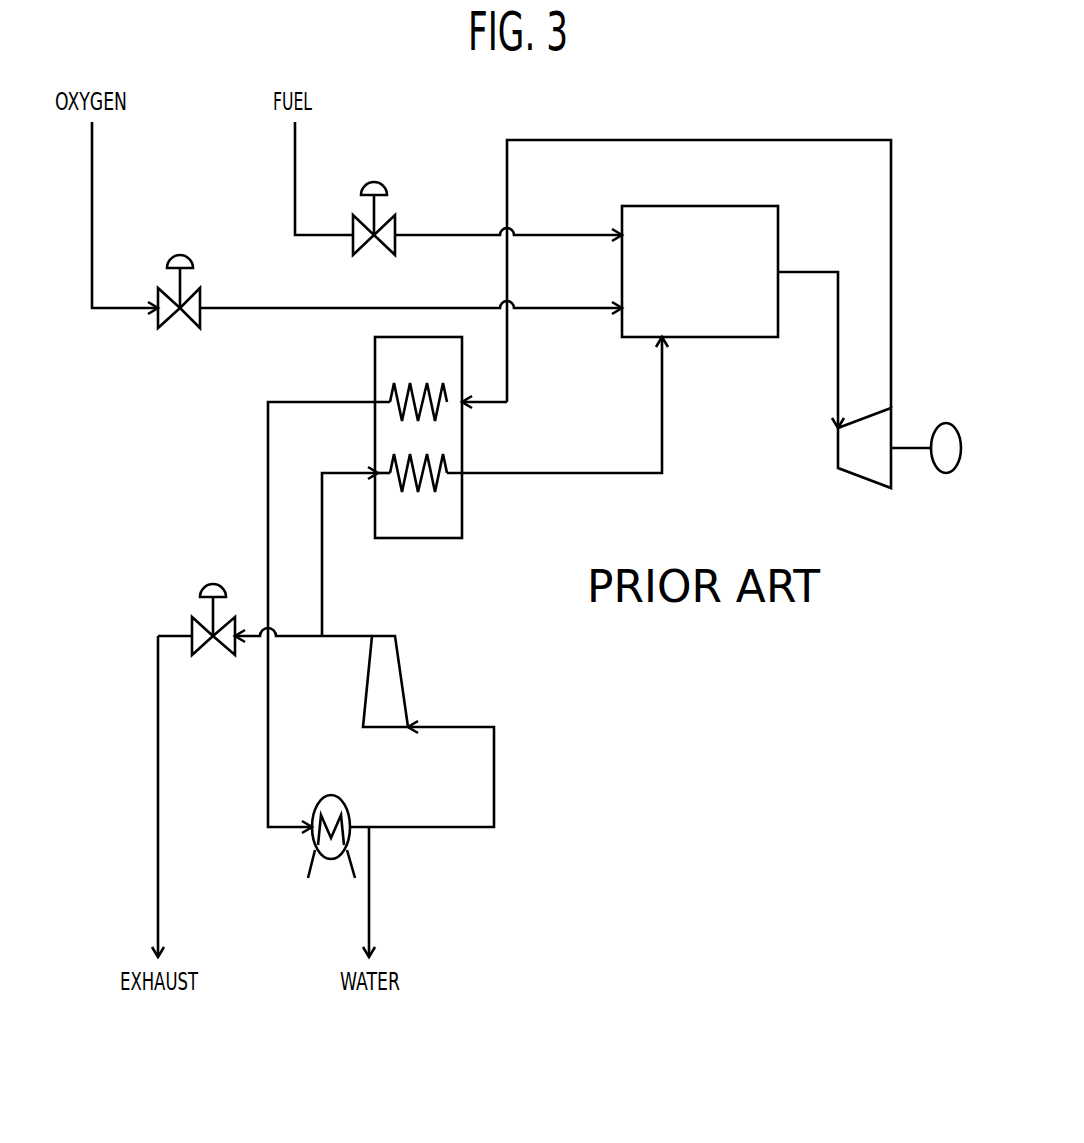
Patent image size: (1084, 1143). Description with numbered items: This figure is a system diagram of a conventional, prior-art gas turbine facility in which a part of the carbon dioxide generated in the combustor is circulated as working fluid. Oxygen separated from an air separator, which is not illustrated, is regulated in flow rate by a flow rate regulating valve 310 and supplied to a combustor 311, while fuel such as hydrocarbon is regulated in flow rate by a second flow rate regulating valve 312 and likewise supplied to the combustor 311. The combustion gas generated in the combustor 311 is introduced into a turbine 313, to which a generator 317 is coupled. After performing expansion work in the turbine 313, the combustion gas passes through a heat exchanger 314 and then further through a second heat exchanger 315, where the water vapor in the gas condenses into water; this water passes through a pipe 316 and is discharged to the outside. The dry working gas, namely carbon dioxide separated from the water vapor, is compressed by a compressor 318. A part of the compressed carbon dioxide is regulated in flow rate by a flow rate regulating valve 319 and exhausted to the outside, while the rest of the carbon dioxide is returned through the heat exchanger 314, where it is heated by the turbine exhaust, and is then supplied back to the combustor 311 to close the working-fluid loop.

The flow rate regulating valve 310 is at (158, 287).
The combustor 311 is at (694, 205).
The flow rate regulating valve 312 is at (353, 214).
The turbine 313 is at (866, 482).
The heat exchanger 314 is at (417, 540).
The heat exchanger 315 is at (331, 795).
The pipe 316 is at (372, 885).
The generator 317 is at (947, 474).
The compressor 318 is at (398, 680).
The flow rate regulating valve 319 is at (194, 617).